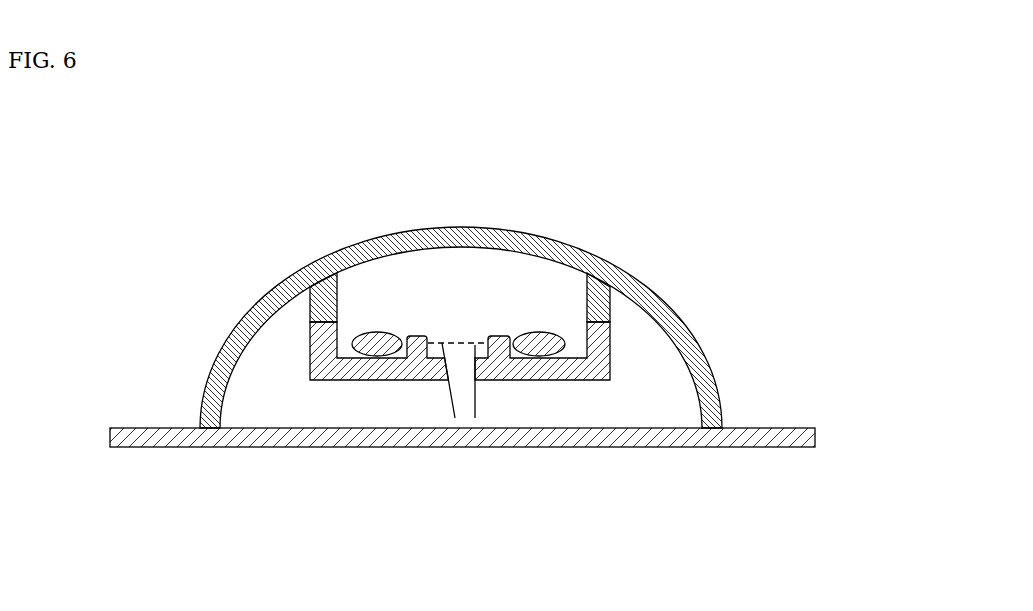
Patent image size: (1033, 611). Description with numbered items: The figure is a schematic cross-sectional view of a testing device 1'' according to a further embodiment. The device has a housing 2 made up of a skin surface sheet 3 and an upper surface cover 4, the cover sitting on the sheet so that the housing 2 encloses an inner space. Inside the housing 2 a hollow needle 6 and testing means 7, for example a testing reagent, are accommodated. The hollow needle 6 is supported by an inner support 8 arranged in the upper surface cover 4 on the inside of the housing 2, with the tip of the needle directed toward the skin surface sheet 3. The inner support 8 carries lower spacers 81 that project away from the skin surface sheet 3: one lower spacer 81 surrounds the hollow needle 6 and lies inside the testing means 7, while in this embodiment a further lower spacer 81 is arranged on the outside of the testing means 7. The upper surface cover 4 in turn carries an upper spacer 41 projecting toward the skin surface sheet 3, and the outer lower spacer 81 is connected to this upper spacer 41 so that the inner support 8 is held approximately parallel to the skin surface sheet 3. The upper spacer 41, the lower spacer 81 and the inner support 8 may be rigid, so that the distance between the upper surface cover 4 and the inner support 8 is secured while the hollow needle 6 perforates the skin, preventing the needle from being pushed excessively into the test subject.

The testing device 1'' is at (494, 304).
The housing 2 is at (837, 292).
The skin surface sheet 3 is at (783, 428).
The upper surface cover 4 is at (695, 327).
The upper spacer 41 is at (308, 300).
The hollow needle 6 is at (477, 405).
The testing means 7 is at (375, 333).
The inner support 8 is at (533, 385).
The lower spacer 81 is at (308, 367).